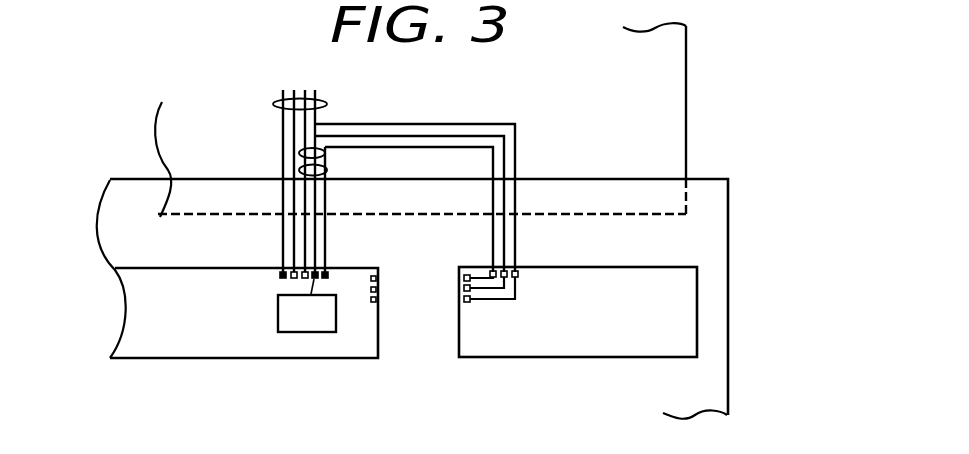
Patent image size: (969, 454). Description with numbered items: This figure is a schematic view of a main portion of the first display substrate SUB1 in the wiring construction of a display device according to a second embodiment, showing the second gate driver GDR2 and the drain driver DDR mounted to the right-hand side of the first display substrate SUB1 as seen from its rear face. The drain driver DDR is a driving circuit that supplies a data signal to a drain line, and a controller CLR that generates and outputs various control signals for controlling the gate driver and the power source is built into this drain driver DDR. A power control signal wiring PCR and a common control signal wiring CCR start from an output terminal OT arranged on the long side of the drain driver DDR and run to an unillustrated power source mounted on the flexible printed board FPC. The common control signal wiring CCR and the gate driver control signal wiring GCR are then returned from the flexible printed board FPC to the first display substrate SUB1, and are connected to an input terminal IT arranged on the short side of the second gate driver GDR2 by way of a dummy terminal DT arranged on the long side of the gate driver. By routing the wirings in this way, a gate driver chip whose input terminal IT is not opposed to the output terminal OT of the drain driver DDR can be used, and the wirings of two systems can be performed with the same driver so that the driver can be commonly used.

The first display substrate SUB1 is at (717, 378).
The flexible printed board FPC is at (623, 74).
The drain driver DDR is at (244, 313).
The second gate driver GDR2 is at (578, 312).
The power control signal wiring PCR is at (273, 104).
The common control signal wiring CCR is at (298, 153).
The gate driver control signal wiring GCR is at (332, 171).
The dummy terminal DT is at (520, 276).
The output terminal OT is at (277, 283).
The controller CLR is at (318, 328).
The input terminal IT is at (455, 290).